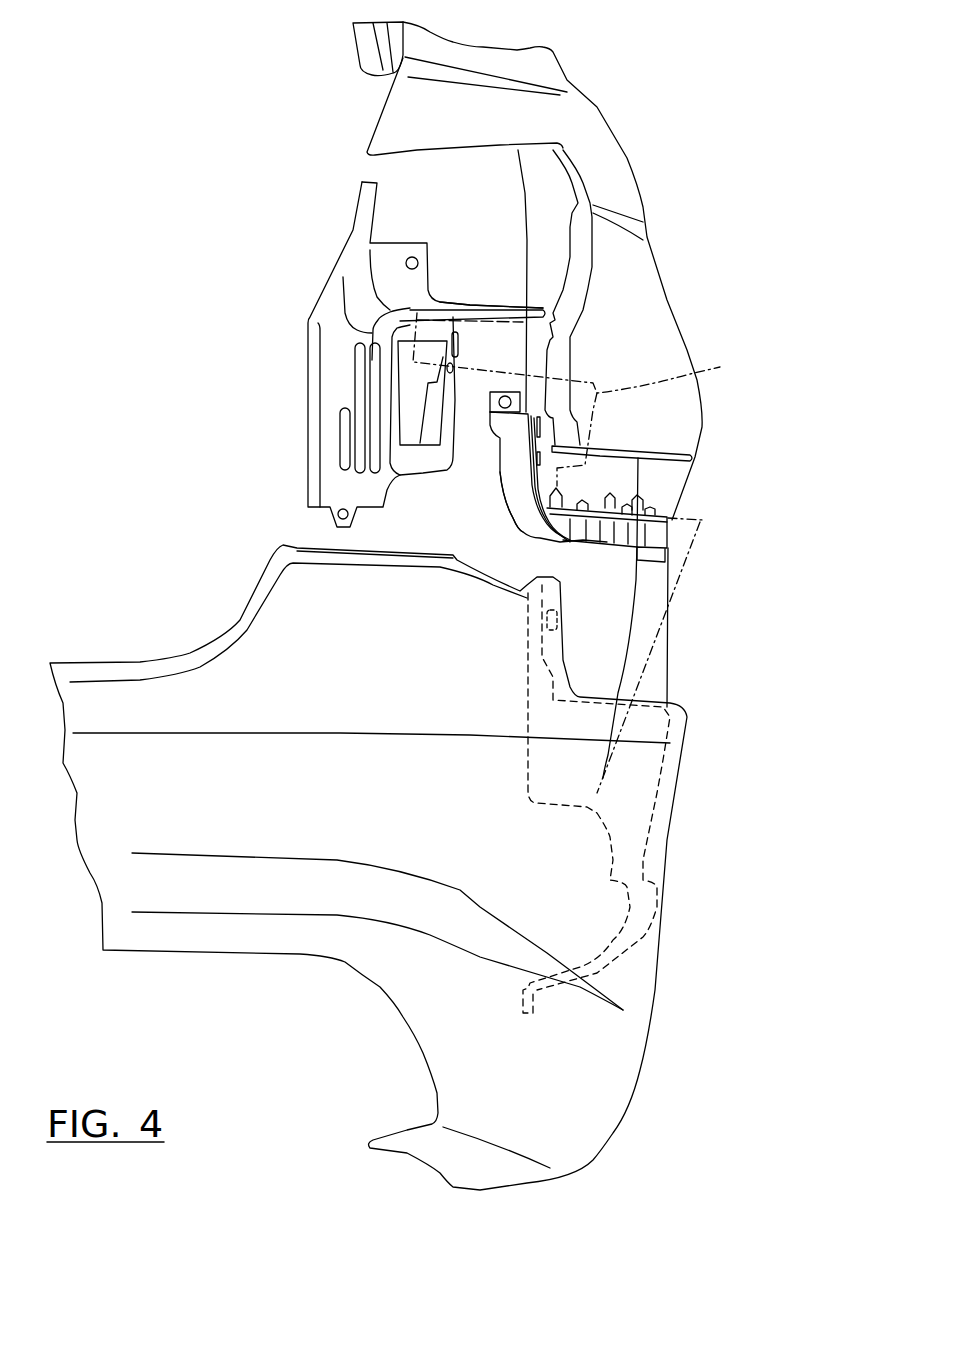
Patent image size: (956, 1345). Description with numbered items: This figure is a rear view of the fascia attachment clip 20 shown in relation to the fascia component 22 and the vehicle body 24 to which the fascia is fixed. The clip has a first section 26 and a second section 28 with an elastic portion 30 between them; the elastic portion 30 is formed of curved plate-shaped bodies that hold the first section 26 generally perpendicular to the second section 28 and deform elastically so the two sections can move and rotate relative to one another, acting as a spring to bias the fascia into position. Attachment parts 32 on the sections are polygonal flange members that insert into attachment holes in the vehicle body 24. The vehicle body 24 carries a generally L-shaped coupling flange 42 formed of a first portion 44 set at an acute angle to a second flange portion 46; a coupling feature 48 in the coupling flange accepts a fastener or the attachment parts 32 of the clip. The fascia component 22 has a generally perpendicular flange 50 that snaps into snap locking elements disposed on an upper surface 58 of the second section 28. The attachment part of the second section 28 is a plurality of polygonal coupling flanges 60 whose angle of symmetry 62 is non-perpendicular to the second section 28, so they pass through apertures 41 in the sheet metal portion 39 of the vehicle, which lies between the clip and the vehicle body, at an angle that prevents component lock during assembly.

The fascia attachment clip 20 is at (667, 537).
The fascia component 22 is at (595, 1072).
The vehicle body 24 is at (313, 468).
The first section 26 is at (517, 477).
The second section 28 is at (600, 542).
The elastic portion 30 is at (533, 522).
The attachment parts 32 is at (645, 506).
The sheet metal portion 39 is at (675, 348).
The apertures 41 is at (635, 448).
The coupling flange 42 is at (489, 306).
The first portion 44 is at (517, 304).
The second flange portion 46 is at (430, 280).
The coupling feature 48 is at (414, 256).
The flange 50 is at (667, 707).
The upper surface 58 is at (627, 503).
The coupling flanges 60 is at (600, 496).
The angle of symmetry 62 is at (584, 553).